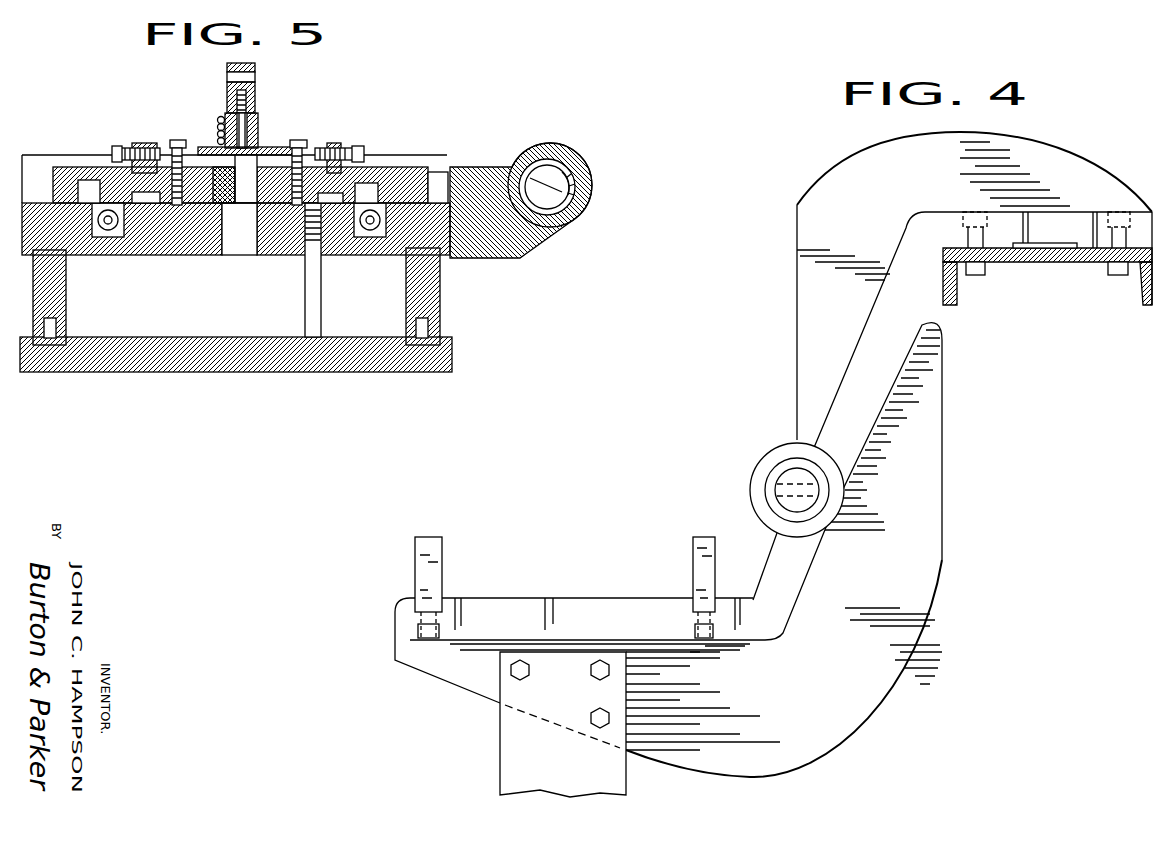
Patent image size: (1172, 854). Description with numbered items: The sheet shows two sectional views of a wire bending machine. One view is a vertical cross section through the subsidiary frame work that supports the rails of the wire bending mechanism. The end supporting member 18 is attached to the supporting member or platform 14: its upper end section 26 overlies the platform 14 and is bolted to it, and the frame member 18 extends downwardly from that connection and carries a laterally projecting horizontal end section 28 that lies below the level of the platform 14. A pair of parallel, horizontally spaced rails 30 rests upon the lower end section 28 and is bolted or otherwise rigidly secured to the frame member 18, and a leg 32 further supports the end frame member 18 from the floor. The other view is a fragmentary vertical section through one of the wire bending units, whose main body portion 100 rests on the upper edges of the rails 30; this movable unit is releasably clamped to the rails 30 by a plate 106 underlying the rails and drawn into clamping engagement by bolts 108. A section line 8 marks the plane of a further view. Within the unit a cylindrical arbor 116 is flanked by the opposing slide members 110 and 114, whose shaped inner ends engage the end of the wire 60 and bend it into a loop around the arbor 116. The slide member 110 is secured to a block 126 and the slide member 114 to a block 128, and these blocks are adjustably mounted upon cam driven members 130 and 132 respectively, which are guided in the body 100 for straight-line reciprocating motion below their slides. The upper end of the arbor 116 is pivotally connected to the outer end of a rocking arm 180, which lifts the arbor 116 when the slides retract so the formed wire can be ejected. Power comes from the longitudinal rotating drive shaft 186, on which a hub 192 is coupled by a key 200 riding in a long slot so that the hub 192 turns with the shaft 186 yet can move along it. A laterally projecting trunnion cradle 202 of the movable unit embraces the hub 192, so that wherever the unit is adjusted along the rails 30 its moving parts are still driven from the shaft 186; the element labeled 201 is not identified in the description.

In FIG. 5, the section line 8— 8 is at (165, 137).
In FIG. 4, the supporting member or platform 14 is at (1060, 262).
In FIG. 4, the end supporting member 18 is at (860, 450).
In FIG. 4, the end section 26 is at (1123, 188).
In FIG. 4, the horizontal extending end section 28 is at (577, 610).
In FIG. 5, the rails 30 is at (60, 307).
In FIG. 4, the rails 30 is at (423, 558).
In FIG. 4, the legs 32 is at (512, 738).
In FIG. 5, the wire 60 is at (220, 123).
In FIG. 5, the main body portion 100 is at (197, 242).
In FIG. 5, the plate 106 is at (282, 358).
In FIG. 5, the bolts 108 is at (310, 297).
In FIG. 5, the slide member 110 is at (200, 143).
In FIG. 5, the slide member 114 is at (290, 143).
In FIG. 5, the arbor 116 is at (260, 120).
In FIG. 5, the block 126 is at (210, 185).
In FIG. 5, the block 128 is at (275, 180).
In FIG. 5, the cam driven member 130 is at (62, 173).
In FIG. 5, the cam driven member 132 is at (417, 172).
In FIG. 5, the rocking arm 180 is at (253, 68).
In FIG. 5, the drive shaft 186 is at (577, 230).
In FIG. 4, the drive shaft 186 is at (800, 503).
In FIG. 5, the hub 192 is at (570, 188).
In FIG. 5, the key 200 is at (593, 200).
In FIG. 5, the pin 201 is at (547, 183).
In FIG. 5, the trunnion cradle 202 is at (550, 150).